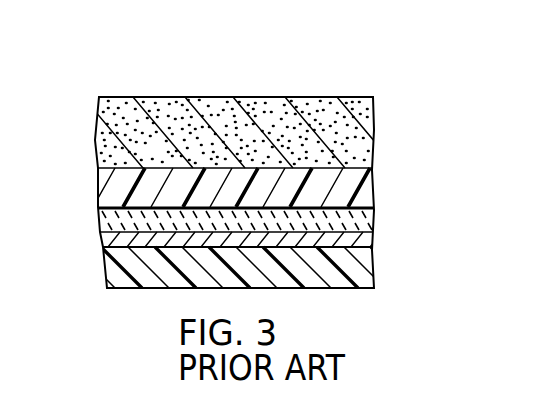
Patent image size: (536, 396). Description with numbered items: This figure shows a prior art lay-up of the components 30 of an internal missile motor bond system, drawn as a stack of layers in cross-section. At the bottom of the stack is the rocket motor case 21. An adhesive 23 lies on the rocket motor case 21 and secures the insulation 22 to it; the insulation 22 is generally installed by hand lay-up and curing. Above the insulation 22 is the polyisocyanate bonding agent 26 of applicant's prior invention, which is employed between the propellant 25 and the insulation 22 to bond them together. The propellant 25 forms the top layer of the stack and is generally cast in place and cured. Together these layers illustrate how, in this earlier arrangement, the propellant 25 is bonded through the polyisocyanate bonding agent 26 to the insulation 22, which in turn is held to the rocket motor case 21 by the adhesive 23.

The components of an internal missile bond system 30 is at (178, 84).
The propellant 25 is at (97, 110).
The polyisocyanate bonding agent 26 is at (97, 190).
The insulation 22 is at (98, 220).
The adhesive 23 is at (102, 238).
The rocket motor case 21 is at (107, 266).